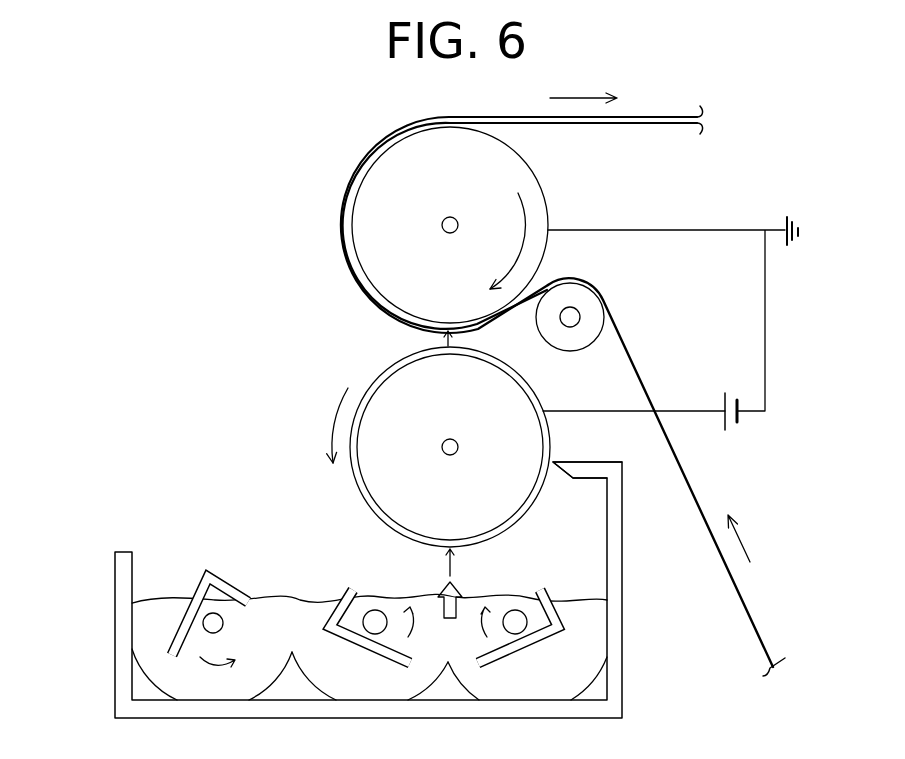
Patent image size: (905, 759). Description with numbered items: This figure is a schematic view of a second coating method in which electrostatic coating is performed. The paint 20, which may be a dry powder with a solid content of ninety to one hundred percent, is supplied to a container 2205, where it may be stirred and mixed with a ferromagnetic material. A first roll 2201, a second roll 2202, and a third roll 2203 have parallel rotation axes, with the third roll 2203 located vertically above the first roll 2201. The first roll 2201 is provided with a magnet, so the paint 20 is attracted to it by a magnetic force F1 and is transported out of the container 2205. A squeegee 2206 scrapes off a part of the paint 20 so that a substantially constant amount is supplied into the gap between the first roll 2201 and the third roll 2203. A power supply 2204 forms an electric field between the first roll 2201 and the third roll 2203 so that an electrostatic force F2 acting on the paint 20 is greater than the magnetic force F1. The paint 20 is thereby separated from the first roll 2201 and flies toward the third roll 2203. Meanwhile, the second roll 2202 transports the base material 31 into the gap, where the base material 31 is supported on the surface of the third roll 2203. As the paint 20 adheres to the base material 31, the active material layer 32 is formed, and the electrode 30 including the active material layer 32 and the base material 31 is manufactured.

The third roll 2203 is at (400, 177).
The first roll 2201 is at (400, 500).
The second roll 2202 is at (587, 290).
The power supply 2204 is at (740, 416).
The container 2205 is at (123, 625).
The squeegee 2206 is at (563, 460).
The paint 20 is at (288, 599).
The electrode 30 is at (768, 62).
The base material 31 is at (760, 631).
The active material layer 32 is at (370, 294).
The magnetic force F1 is at (462, 570).
The electrostatic force F2 is at (462, 338).